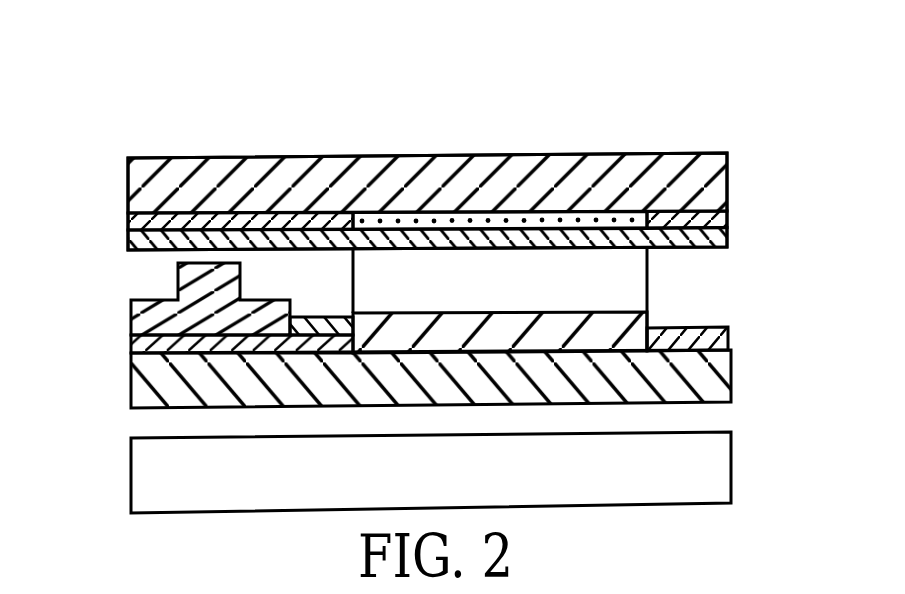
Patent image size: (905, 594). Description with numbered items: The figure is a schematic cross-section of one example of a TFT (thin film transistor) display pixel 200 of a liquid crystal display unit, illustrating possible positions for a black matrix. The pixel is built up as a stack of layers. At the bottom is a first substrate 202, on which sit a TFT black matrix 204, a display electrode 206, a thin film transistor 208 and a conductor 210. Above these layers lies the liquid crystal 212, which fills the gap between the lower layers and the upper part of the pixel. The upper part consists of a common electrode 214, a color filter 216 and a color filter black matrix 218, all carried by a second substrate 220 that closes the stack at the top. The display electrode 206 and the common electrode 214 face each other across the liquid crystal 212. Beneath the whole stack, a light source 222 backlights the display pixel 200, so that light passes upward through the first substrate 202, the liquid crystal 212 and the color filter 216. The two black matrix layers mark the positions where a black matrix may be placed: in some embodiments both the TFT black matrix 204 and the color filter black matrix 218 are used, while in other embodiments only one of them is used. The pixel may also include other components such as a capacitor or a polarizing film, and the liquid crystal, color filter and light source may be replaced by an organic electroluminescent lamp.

The display pixel 200 is at (122, 100).
The first substrate 202 is at (135, 386).
The TFT black matrix 204 is at (133, 346).
The display electrode 206 is at (640, 321).
The thin film transistor 208 is at (130, 318).
The conductor 210 is at (311, 317).
The liquid crystal 212 is at (630, 285).
The common electrode 214 is at (727, 231).
The color filter 216 is at (503, 213).
The color filter black matrix 218 is at (727, 196).
The second substrate 220 is at (365, 163).
The light source 222 is at (712, 450).